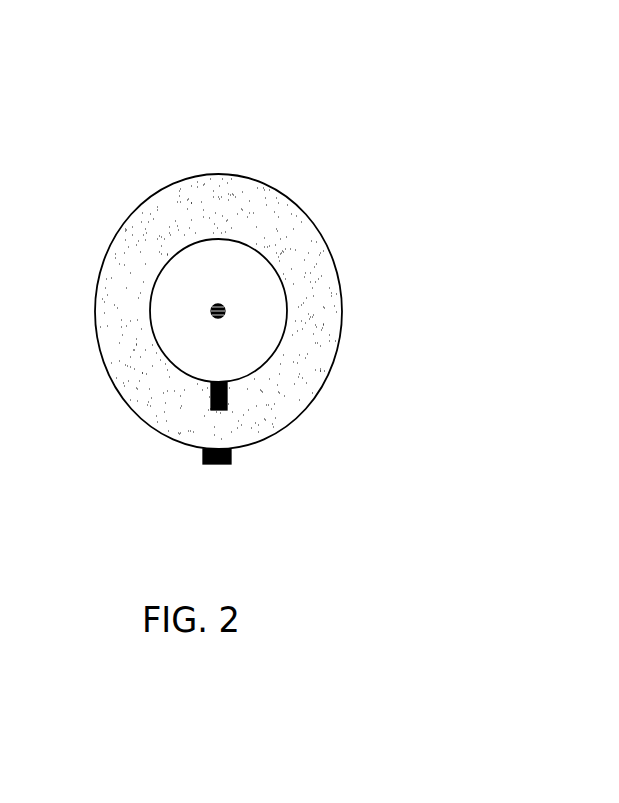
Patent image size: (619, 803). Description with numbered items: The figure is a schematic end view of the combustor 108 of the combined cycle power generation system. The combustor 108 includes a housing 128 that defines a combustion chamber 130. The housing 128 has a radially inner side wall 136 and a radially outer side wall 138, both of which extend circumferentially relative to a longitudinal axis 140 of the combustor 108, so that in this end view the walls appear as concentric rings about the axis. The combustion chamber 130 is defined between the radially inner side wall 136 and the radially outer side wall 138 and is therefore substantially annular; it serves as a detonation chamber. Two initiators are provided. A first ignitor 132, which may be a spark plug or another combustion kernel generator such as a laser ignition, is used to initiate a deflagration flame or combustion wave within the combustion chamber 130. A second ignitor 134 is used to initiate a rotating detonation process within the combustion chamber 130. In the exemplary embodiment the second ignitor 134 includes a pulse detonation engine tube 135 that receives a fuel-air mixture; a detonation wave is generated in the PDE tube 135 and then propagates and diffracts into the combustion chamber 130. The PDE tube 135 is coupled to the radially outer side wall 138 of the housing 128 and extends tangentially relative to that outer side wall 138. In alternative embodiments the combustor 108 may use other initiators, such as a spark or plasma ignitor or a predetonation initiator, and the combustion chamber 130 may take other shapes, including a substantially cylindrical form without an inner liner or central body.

The combustor 108 is at (388, 73).
The housing 128 is at (100, 255).
The combustion chamber 130 is at (315, 251).
The first ignitor 132 is at (227, 397).
The second ignitor 134 is at (218, 472).
The pulse detonation engine (PDE) tube 135 is at (203, 461).
The radially inner side wall 136 is at (253, 248).
The radially outer side wall 138 is at (342, 305).
The longitudinal axis 140 is at (218, 303).